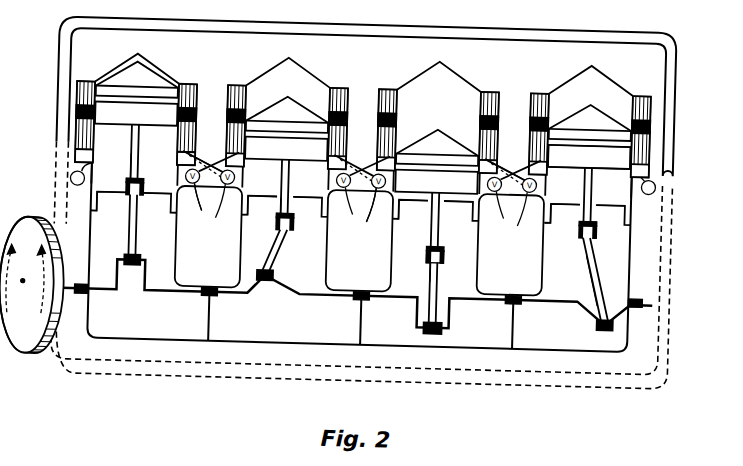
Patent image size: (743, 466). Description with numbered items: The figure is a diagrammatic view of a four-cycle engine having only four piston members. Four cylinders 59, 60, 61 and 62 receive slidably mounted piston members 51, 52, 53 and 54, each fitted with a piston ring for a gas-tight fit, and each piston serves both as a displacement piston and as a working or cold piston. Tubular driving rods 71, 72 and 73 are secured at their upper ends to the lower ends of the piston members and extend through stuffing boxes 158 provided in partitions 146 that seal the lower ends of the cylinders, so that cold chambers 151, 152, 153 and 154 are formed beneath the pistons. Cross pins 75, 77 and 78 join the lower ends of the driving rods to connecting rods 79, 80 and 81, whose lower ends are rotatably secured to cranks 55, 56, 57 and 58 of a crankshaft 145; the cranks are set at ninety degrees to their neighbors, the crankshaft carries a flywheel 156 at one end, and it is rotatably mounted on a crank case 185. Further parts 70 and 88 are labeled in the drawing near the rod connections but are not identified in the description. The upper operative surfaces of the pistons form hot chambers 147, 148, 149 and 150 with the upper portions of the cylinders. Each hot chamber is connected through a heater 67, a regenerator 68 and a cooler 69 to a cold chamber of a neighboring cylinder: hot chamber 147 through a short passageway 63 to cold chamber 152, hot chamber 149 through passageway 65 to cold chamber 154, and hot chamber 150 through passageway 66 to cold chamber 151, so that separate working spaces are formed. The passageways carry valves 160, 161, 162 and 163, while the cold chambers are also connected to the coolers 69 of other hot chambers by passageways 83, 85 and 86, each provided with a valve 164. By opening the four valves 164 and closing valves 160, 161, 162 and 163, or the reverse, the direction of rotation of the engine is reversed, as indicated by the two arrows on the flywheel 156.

The piston member 51 is at (152, 77).
The piston member 52 is at (300, 110).
The piston member 53 is at (450, 137).
The piston member 54 is at (601, 108).
The crank 55 is at (148, 282).
The crank 56 is at (300, 285).
The crank 57 is at (468, 300).
The crank 58 is at (609, 326).
The cylinder 59 is at (74, 141).
The cylinder 60 is at (230, 96).
The cylinder 61 is at (383, 118).
The cylinder 62 is at (536, 122).
The short passageway 63 is at (196, 138).
The passageway 65 is at (504, 146).
The passageway 66 is at (499, 25).
The heater 67 is at (195, 88).
The regenerator 68 is at (363, 107).
The cooler 69 is at (363, 115).
The crosshead 70 is at (297, 192).
The tubular driving rod 71 is at (143, 163).
The tubular driving rod 72 is at (598, 176).
The tubular driving rod 73 is at (446, 260).
The cross pin 75 is at (140, 180).
The cross pin 77 is at (441, 245).
The cross pin 78 is at (598, 232).
The connecting rod 79 is at (138, 236).
The connecting rod 80 is at (280, 252).
The connecting rod 81 is at (453, 276).
The passageway 83 is at (187, 150).
The passageway 85 is at (504, 177).
The passageway 86 is at (486, 381).
The rod 88 is at (592, 273).
The crankshaft 145 is at (312, 298).
The partition 146 is at (125, 216).
The hot chamber 147 is at (110, 76).
The hot chamber 148 is at (275, 70).
The hot chamber 149 is at (425, 70).
The hot chamber 150 is at (585, 68).
The cold chamber 151 is at (78, 176).
The cold chamber 152 is at (209, 237).
The cold chamber 153 is at (360, 241).
The cold chamber 154 is at (548, 194).
The flywheel 156 is at (31, 357).
The stuffing box 158 is at (575, 196).
The valve 160 is at (198, 204).
The valve 161 is at (364, 211).
The valve 162 is at (589, 157).
The valve 163 is at (74, 188).
The valve 164 is at (672, 177).
The crank case 185 is at (282, 338).